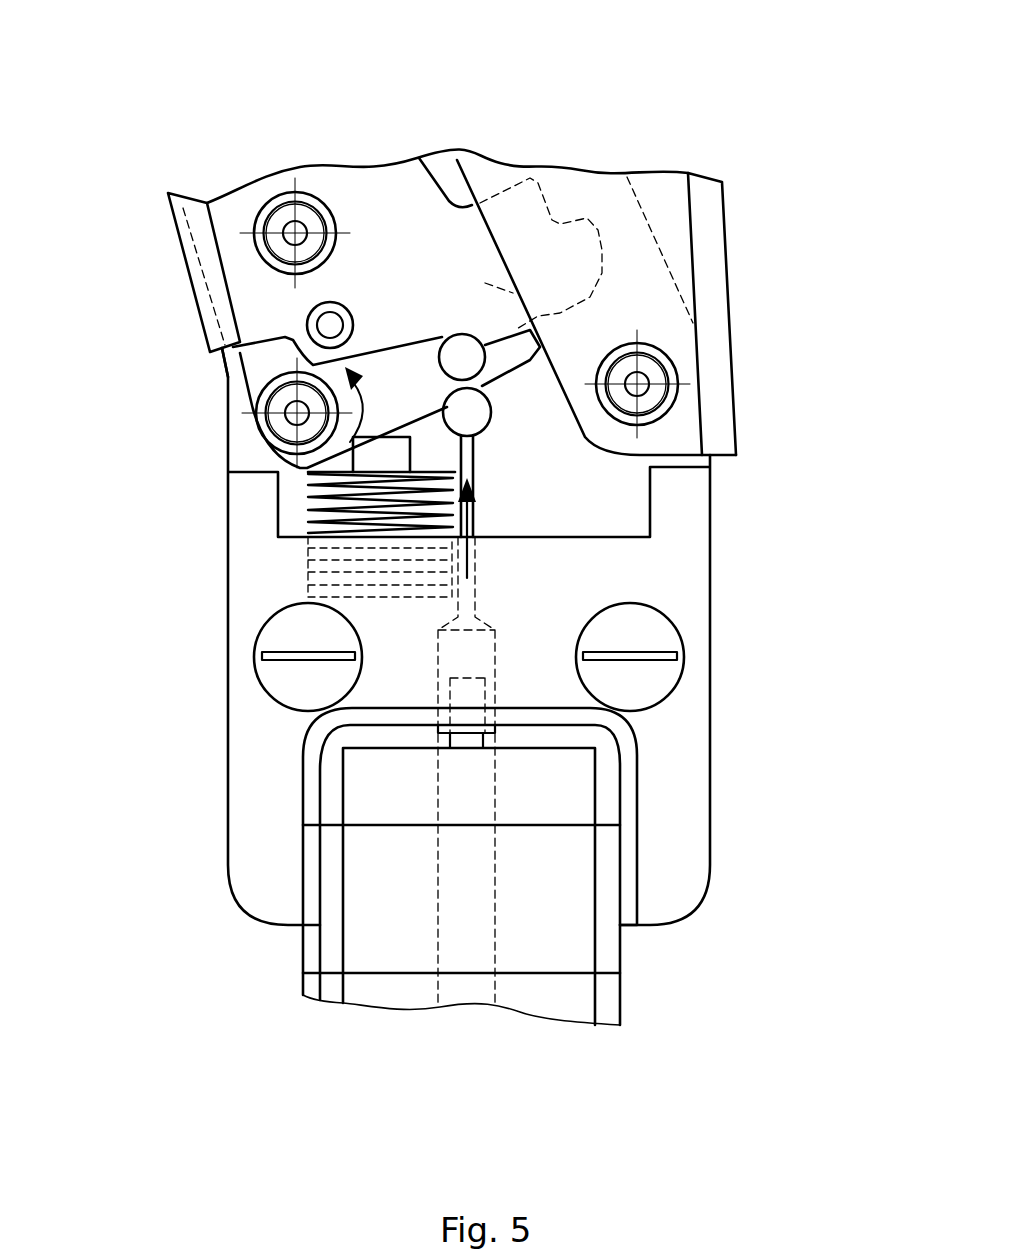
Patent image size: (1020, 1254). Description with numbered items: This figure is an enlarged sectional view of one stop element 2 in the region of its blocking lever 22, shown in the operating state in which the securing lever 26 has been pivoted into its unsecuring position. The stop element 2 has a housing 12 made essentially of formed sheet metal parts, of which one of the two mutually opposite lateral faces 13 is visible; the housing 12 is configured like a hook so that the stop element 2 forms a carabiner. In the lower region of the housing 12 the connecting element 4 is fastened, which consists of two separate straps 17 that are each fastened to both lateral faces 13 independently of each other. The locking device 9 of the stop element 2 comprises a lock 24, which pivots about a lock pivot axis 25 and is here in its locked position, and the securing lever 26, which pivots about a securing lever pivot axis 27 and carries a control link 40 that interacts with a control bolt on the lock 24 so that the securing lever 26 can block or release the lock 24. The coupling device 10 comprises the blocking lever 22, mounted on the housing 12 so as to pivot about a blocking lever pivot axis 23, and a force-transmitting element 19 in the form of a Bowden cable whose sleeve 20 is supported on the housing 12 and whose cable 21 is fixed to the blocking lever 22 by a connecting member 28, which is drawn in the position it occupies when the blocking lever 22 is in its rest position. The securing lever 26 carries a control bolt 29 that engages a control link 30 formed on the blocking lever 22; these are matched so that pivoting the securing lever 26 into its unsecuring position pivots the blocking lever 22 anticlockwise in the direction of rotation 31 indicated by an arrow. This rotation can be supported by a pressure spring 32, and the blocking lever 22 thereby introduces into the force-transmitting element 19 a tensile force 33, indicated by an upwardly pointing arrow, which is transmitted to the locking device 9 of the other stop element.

The stop element 2 is at (770, 112).
The connecting element 4 is at (627, 993).
The locking device 9 is at (205, 404).
The coupling device 10 is at (420, 666).
The housing 12 is at (718, 708).
The lateral faces 13 is at (680, 597).
The straps 17 is at (375, 992).
The force-transmitting element 19 is at (487, 647).
The sleeve 20 is at (473, 742).
The cable 21 is at (473, 460).
The blocking lever 22 is at (427, 350).
The blocking lever pivot axis 23 is at (262, 442).
The lock 24 is at (712, 247).
The lock pivot axis 25 is at (655, 375).
The securing lever 26 is at (242, 208).
The securing lever pivot axis 27 is at (283, 240).
The connecting member 28 is at (472, 418).
The control bolt 29 is at (345, 303).
The control link 30 is at (515, 285).
The direction of rotation 31 is at (383, 345).
The pressure spring 32 is at (308, 497).
The tensile force 33 is at (475, 523).
The control link 40 is at (560, 220).